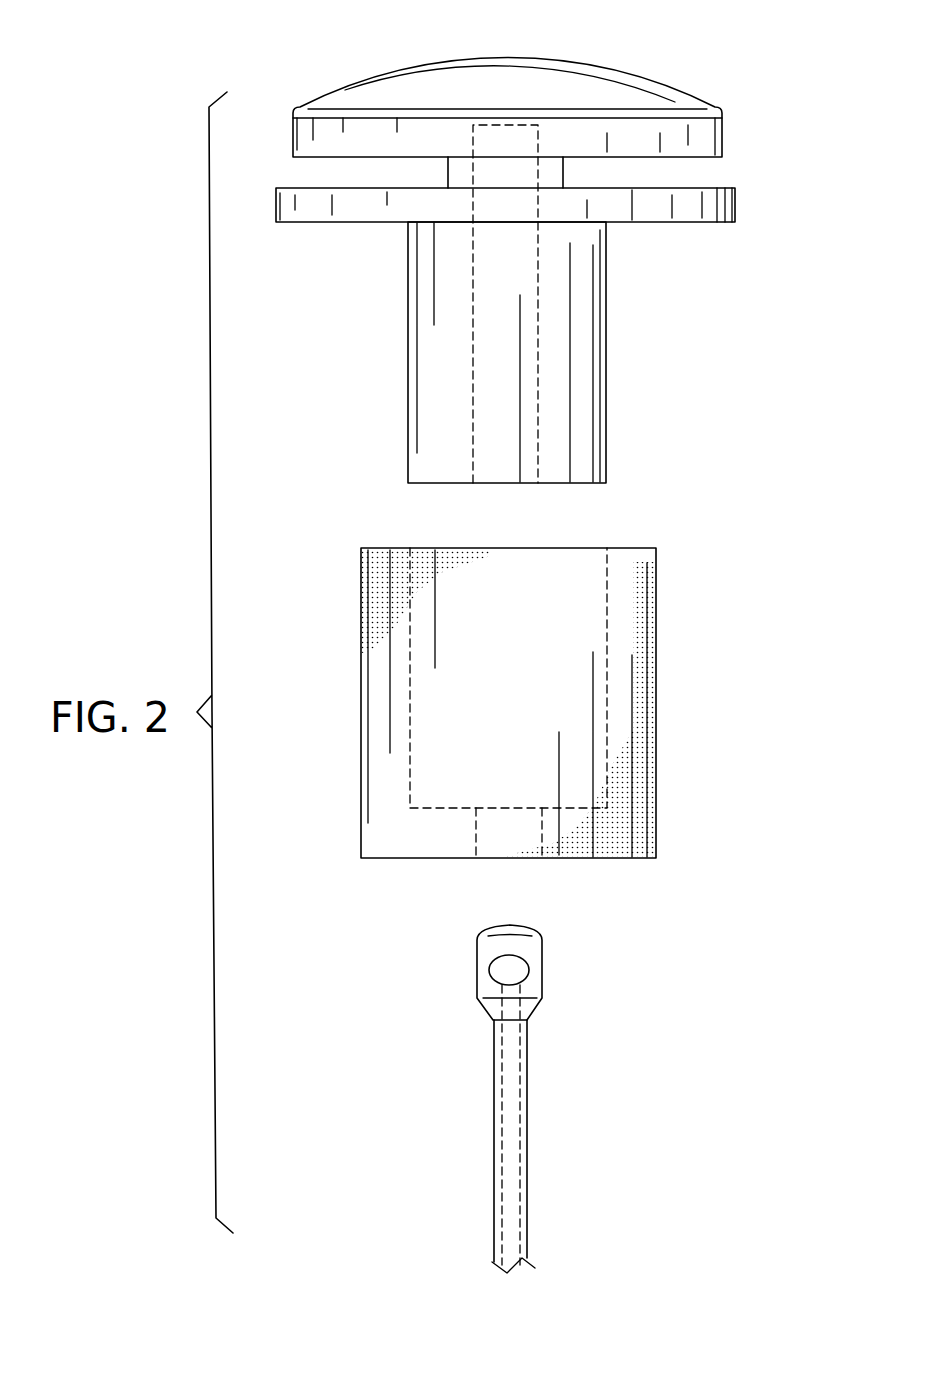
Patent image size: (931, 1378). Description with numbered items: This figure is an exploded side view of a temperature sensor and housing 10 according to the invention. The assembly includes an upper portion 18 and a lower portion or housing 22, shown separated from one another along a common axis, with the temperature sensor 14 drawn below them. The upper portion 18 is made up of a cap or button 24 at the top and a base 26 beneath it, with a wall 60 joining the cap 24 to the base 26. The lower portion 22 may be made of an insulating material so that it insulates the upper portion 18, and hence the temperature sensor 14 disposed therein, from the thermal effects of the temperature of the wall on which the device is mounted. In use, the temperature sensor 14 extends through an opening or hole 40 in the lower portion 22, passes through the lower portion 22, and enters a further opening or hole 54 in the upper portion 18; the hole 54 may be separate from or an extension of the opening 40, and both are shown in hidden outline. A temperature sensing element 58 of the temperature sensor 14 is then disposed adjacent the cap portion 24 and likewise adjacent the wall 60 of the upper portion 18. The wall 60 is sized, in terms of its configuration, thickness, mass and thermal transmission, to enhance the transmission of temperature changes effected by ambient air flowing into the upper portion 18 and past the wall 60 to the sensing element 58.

The temperature sensor and housing 10 is at (540, 253).
The temperature sensor 14 is at (528, 1099).
The upper portion 18 is at (561, 335).
The lower portion or housing 22 is at (582, 731).
The cap or button 24 is at (412, 90).
The base 26 is at (349, 210).
The opening or hole 40 is at (542, 830).
The further opening or hole 54 is at (538, 130).
The temperature sensing element 58 is at (513, 968).
The wall 60 is at (448, 172).